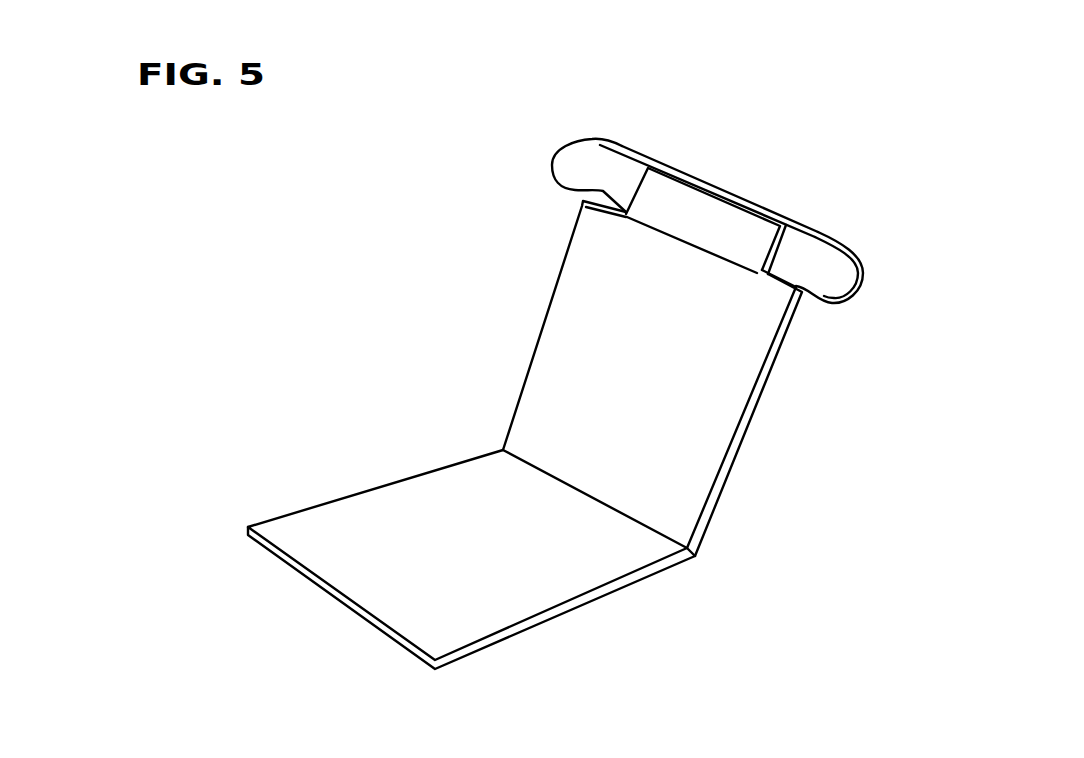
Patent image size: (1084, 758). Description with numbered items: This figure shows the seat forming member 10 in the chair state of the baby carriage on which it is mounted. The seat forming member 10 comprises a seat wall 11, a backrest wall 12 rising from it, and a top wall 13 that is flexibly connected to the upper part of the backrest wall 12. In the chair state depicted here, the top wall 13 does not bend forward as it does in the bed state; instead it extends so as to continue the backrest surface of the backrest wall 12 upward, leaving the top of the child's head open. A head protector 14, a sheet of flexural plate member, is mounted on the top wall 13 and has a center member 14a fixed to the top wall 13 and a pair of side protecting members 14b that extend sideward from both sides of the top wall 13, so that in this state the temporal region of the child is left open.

The seat forming member 10 is at (368, 356).
The seat wall 11 is at (543, 599).
The backrest wall 12 is at (707, 460).
The top wall 13 is at (663, 220).
The head protector 14 is at (655, 140).
The center member 14a is at (727, 184).
The side protecting members 14b is at (569, 162).